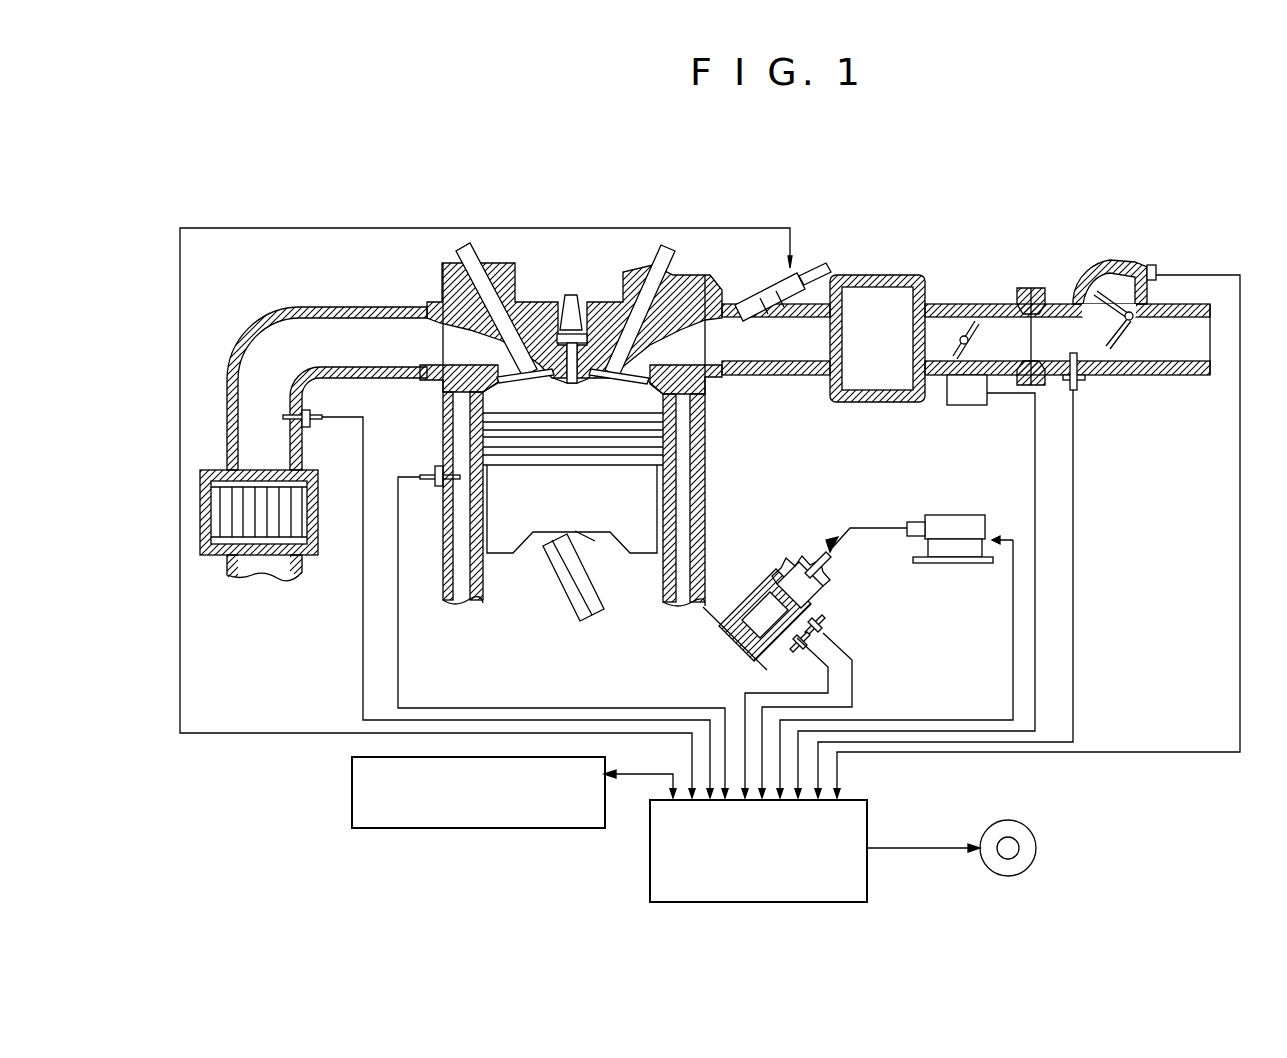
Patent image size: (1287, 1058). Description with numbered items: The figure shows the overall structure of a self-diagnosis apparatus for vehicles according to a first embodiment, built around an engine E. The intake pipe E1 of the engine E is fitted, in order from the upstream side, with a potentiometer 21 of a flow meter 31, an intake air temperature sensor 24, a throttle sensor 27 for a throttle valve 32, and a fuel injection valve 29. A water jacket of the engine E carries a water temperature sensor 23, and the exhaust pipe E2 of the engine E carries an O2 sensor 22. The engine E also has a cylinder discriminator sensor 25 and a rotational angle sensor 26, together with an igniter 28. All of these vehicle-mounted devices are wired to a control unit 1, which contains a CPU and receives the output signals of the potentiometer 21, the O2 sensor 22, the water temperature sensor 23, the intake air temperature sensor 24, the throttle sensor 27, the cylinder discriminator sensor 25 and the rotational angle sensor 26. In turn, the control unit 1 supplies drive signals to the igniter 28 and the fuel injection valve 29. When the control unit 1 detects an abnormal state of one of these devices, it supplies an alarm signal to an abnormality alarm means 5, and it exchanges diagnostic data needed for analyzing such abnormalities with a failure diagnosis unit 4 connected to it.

The exhaust pipe E2 is at (279, 317).
The O2 sensor 22 is at (330, 395).
The water temperature sensor 23 is at (432, 470).
The engine E is at (503, 272).
The fuel injection valve 29 is at (800, 270).
The intake pipe E1 is at (950, 307).
The throttle valve 32 is at (980, 325).
The flow meter 31 is at (1110, 293).
The potentiometer 21 is at (1152, 268).
The intake air temperature sensor 24 is at (1082, 382).
The throttle sensor 27 is at (968, 405).
The igniter 28 is at (940, 522).
The cylinder discriminator sensor 25 is at (830, 630).
The rotational angle sensor 26 is at (807, 653).
The failure diagnosis unit 4 is at (430, 830).
The control unit 1 is at (650, 884).
The abnormality alarm means 5 is at (1037, 848).